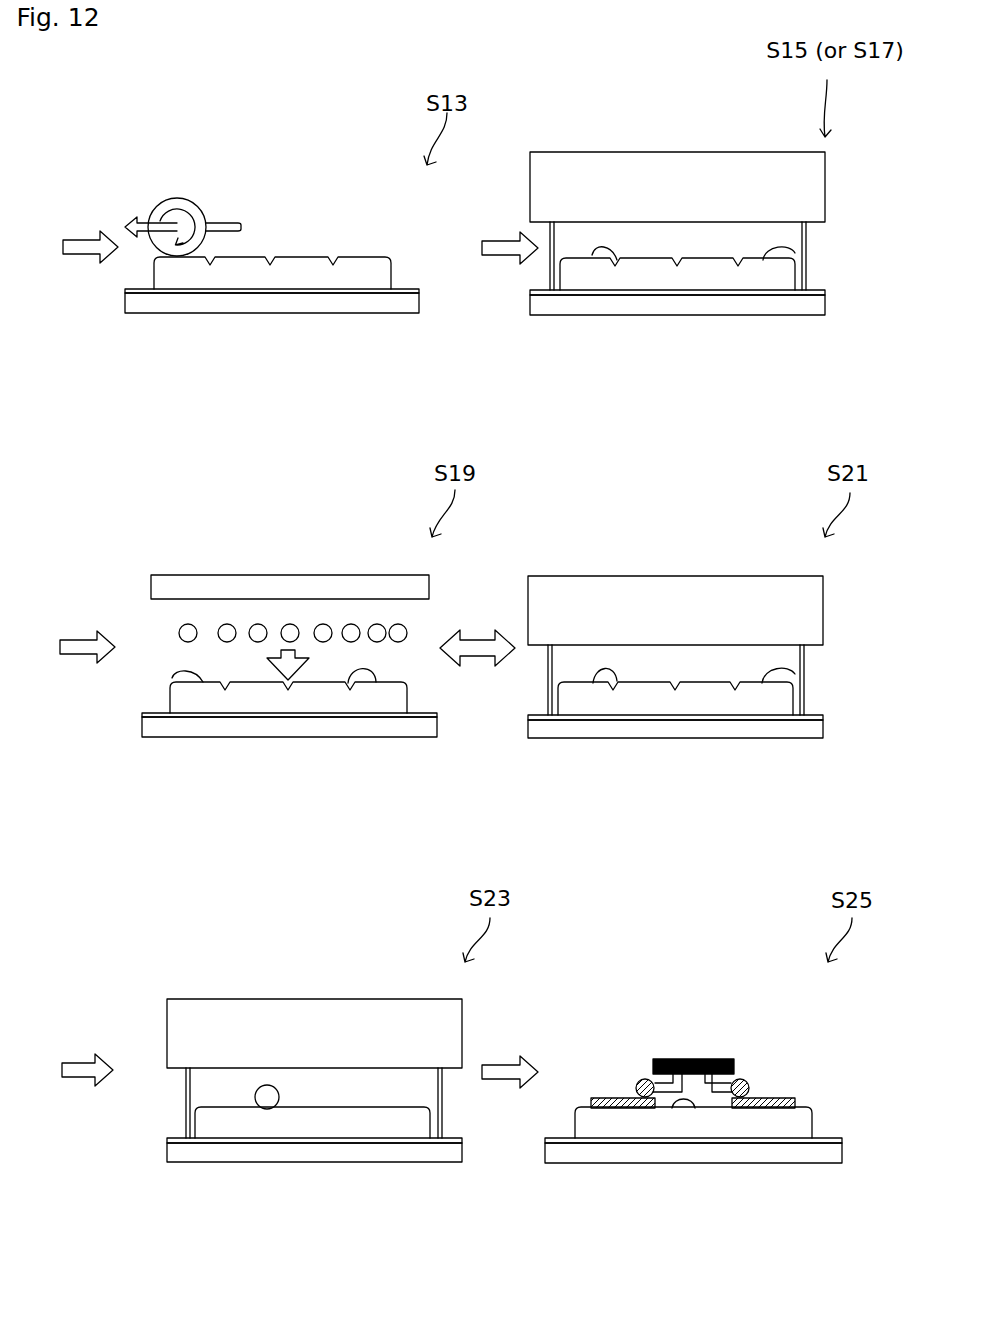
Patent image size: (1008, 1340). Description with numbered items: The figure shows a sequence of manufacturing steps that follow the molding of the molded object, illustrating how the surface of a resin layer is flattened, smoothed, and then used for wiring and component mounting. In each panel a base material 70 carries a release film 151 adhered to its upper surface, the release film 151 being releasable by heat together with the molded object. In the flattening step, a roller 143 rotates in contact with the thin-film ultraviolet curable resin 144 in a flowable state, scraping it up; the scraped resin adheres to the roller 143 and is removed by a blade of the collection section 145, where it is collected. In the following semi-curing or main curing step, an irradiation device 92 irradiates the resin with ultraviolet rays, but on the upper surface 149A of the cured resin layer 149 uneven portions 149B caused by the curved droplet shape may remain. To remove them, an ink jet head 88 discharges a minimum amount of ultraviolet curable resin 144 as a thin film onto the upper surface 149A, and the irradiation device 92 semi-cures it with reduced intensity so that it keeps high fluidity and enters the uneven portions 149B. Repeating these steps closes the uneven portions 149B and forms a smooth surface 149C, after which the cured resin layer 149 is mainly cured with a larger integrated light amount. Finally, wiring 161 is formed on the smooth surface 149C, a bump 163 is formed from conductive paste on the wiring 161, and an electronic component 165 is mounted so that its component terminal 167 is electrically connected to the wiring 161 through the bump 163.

The base material 70 is at (310, 303).
The ink jet head 88 is at (237, 587).
The irradiation device 92 is at (618, 165).
The roller 143 is at (170, 197).
The ultraviolet curable resin 144 is at (178, 630).
The collection section 145 is at (225, 220).
The cured resin layer 149 is at (375, 276).
The upper surface 149A is at (795, 253).
The uneven portion 149B is at (592, 255).
The smooth surface 149C is at (795, 674).
The release film 151 is at (180, 293).
The wiring 161 is at (788, 1095).
The bump 163 is at (748, 1082).
The electronic component 165 is at (690, 1057).
The component terminal 167 is at (668, 1088).